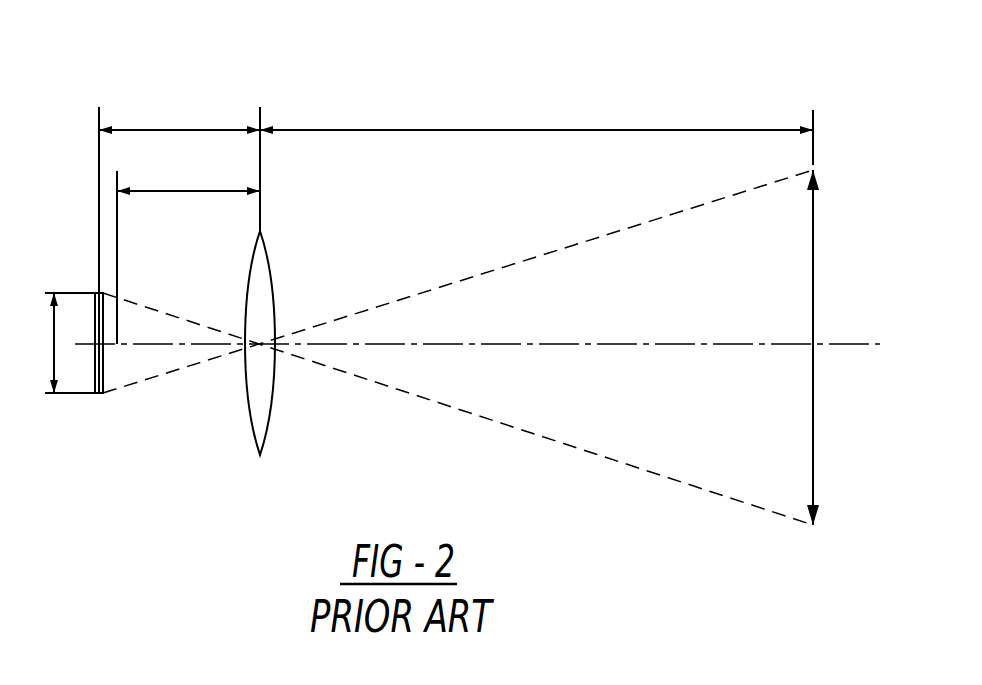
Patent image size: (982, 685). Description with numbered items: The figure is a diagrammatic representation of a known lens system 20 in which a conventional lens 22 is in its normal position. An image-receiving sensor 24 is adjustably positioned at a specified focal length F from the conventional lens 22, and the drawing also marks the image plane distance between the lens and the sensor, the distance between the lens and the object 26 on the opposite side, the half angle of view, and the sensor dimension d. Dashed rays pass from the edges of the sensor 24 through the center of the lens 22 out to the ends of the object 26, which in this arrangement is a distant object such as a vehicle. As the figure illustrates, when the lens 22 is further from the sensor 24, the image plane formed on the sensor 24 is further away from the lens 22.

The lens system 20 is at (236, 72).
The conventional lens 22 is at (260, 412).
The image-receiving sensor 24 is at (100, 377).
The object 26 is at (813, 441).